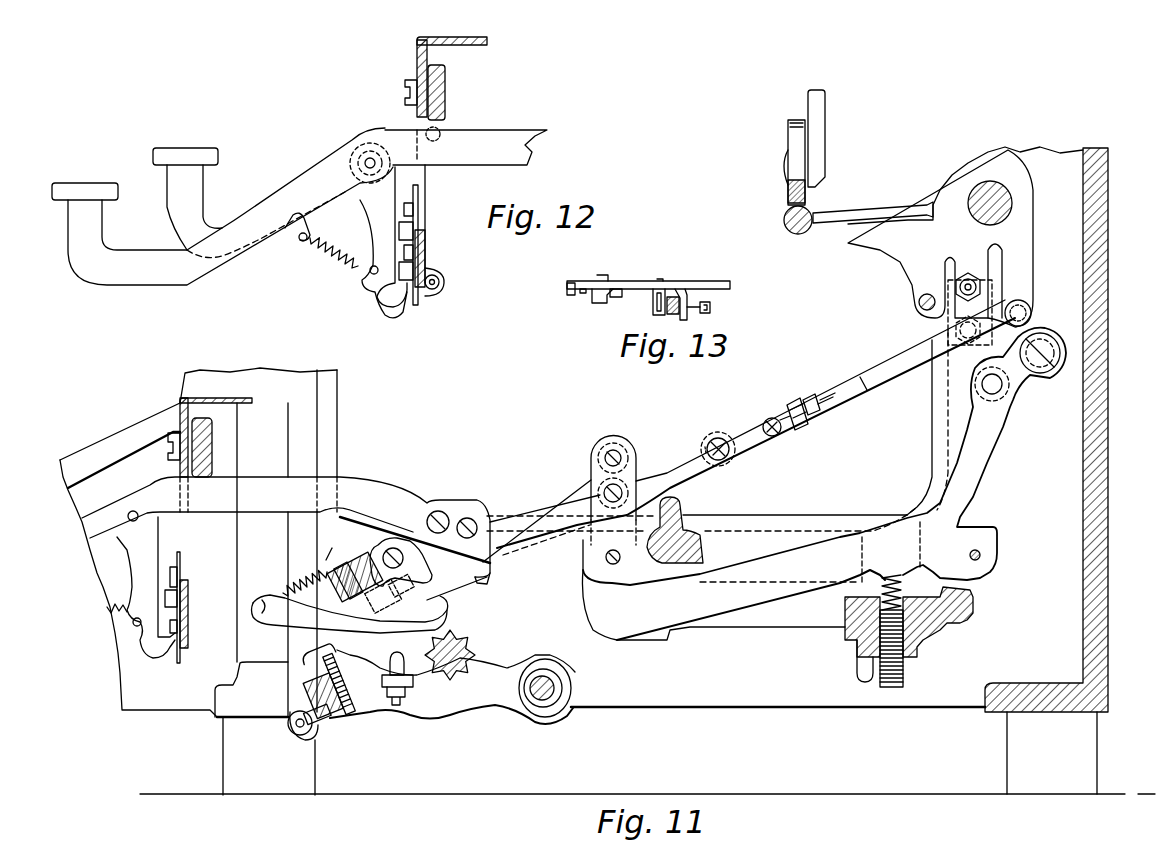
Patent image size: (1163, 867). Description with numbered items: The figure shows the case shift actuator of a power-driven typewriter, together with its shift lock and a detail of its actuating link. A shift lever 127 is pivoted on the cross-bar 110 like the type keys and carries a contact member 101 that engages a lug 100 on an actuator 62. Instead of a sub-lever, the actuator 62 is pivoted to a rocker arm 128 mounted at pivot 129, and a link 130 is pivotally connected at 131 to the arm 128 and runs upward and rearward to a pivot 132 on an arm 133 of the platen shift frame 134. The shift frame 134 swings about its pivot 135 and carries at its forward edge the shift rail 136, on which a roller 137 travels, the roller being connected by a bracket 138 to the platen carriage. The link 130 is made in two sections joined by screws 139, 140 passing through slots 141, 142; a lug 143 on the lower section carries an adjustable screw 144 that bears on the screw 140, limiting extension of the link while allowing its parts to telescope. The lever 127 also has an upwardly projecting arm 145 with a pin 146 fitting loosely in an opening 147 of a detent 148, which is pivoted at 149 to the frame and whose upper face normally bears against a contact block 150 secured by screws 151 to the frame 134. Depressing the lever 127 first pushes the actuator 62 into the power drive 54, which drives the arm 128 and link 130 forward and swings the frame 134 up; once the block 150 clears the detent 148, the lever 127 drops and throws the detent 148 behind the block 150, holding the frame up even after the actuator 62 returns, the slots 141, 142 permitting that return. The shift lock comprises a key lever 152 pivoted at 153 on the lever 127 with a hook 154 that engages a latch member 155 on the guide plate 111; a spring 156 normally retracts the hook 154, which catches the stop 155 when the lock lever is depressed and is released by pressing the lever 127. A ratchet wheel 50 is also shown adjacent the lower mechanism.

In FIG. 11, the ratchet wheel 50 is at (470, 633).
In FIG. 11, the power drive 54 is at (480, 652).
In FIG. 11, the actuator 62 is at (452, 573).
In FIG. 11, the lug 100 is at (482, 586).
In FIG. 11, the contact member 101 is at (489, 566).
In FIG. 11, the cross-bar 110 is at (946, 621).
In FIG. 12, the guide plate 111 is at (430, 259).
In FIG. 11, the guide plate 111 is at (189, 632).
In FIG. 12, the shift lever 127 is at (503, 138).
In FIG. 11, the shift lever 127 is at (282, 492).
In FIG. 11, the rocker arm 128 is at (690, 512).
In FIG. 11, the pivot 129 is at (618, 565).
In FIG. 13, the link 130 is at (573, 292).
In FIG. 11, the link 130 is at (690, 445).
In FIG. 11, the pivot 131 is at (600, 490).
In FIG. 11, the pivot 132 is at (1032, 308).
In FIG. 11, the arm 133 is at (1030, 272).
In FIG. 11, the platen shift frame 134 is at (884, 209).
In FIG. 11, the pivot 135 is at (1000, 190).
In FIG. 11, the shift rail 136 is at (785, 222).
In FIG. 11, the roller 137 is at (787, 127).
In FIG. 11, the bracket 138 is at (823, 111).
In FIG. 13, the screw 139 is at (614, 292).
In FIG. 11, the screw 139 is at (733, 459).
In FIG. 13, the screw 140 is at (656, 306).
In FIG. 11, the screw 140 is at (770, 417).
In FIG. 13, the slot 141 is at (582, 305).
In FIG. 11, the slot 141 is at (731, 450).
In FIG. 11, the slot 142 is at (767, 423).
In FIG. 13, the lug 143 is at (684, 320).
In FIG. 11, the lug 143 is at (800, 423).
In FIG. 13, the adjustable screw 144 is at (712, 314).
In FIG. 11, the adjustable screw 144 is at (800, 407).
In FIG. 11, the arm 145 is at (975, 478).
In FIG. 11, the pin 146 is at (973, 407).
In FIG. 11, the opening 147 is at (973, 387).
In FIG. 11, the detent 148 is at (1010, 389).
In FIG. 11, the pivot 149 is at (1056, 336).
In FIG. 11, the contact block 150 is at (925, 320).
In FIG. 11, the screws 151 is at (966, 280).
In FIG. 12, the key lever 152 is at (190, 208).
In FIG. 12, the pivot 153 is at (370, 158).
In FIG. 12, the hook 154 is at (390, 304).
In FIG. 11, the hook 154 is at (165, 662).
In FIG. 12, the latch member 155 is at (418, 303).
In FIG. 12, the spring 156 is at (322, 262).